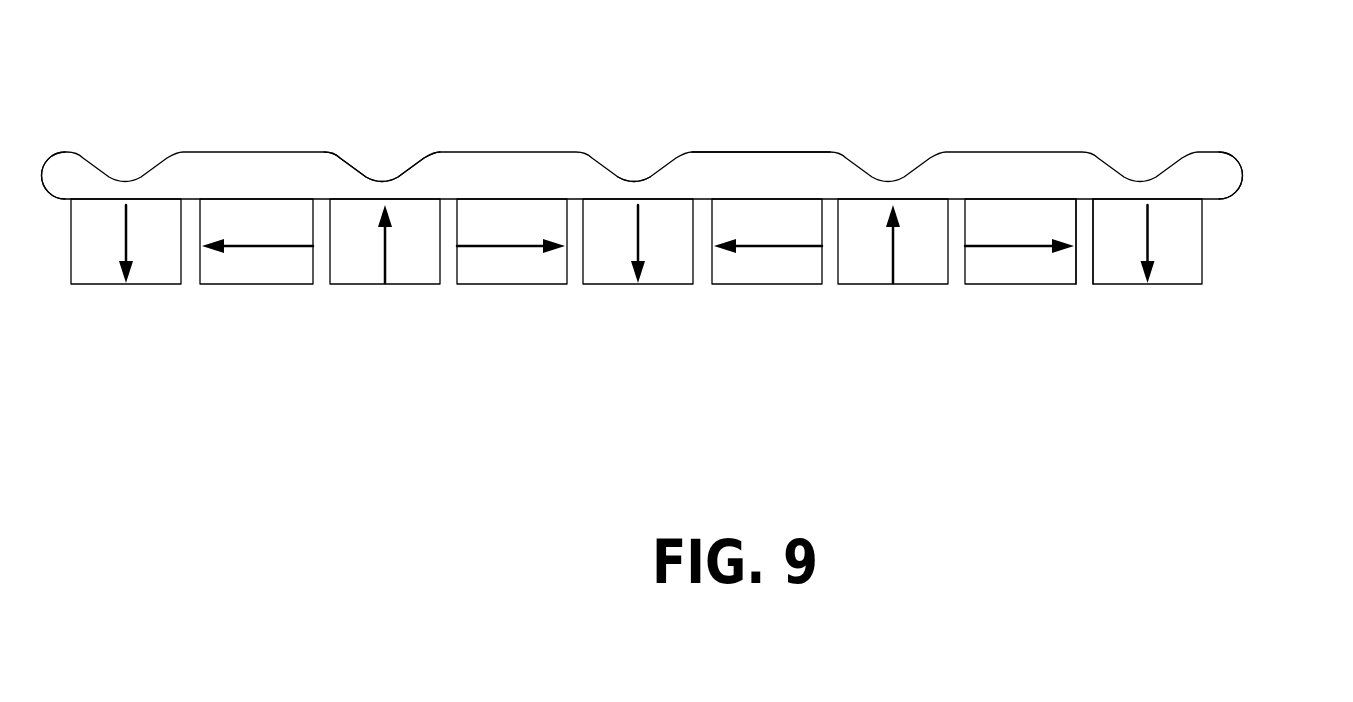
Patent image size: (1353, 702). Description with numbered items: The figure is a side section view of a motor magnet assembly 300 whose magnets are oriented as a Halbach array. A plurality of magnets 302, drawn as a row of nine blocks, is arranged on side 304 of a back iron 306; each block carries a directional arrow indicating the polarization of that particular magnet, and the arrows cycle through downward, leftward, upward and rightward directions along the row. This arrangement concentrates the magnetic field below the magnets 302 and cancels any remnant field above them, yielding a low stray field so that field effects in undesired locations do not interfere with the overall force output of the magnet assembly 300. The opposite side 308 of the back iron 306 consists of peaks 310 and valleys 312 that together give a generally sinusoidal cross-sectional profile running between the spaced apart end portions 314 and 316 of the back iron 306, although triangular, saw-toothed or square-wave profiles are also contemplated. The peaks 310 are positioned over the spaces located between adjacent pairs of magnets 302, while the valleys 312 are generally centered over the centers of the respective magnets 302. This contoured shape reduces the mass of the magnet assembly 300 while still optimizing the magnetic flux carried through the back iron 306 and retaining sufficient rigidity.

The magnet assembly 300 is at (1262, 72).
The magnets 302 is at (248, 284).
The side of back iron 304 is at (1088, 320).
The back iron 306 is at (1218, 143).
The side of back iron 308 is at (705, 152).
The peaks 310 is at (450, 152).
The valleys 312 is at (636, 180).
The end portion 314 is at (50, 158).
The end portion 316 is at (1242, 182).